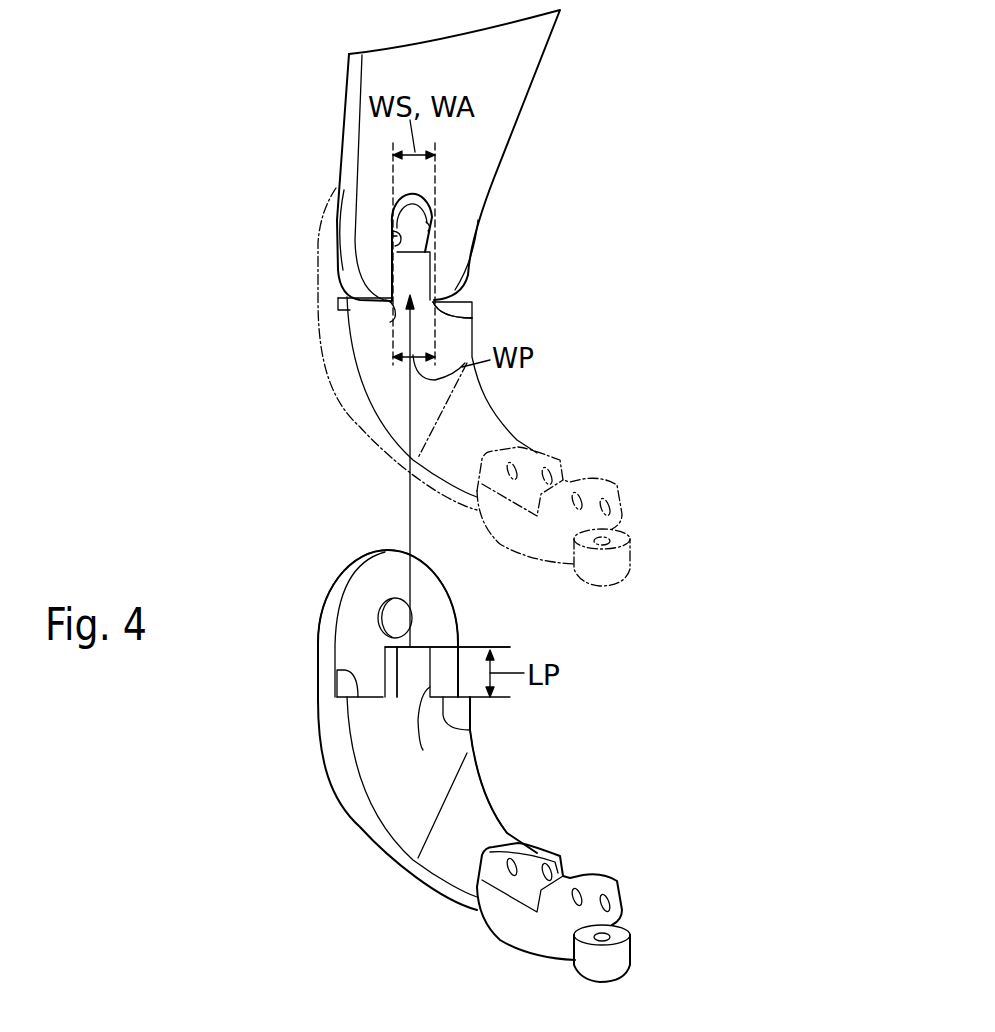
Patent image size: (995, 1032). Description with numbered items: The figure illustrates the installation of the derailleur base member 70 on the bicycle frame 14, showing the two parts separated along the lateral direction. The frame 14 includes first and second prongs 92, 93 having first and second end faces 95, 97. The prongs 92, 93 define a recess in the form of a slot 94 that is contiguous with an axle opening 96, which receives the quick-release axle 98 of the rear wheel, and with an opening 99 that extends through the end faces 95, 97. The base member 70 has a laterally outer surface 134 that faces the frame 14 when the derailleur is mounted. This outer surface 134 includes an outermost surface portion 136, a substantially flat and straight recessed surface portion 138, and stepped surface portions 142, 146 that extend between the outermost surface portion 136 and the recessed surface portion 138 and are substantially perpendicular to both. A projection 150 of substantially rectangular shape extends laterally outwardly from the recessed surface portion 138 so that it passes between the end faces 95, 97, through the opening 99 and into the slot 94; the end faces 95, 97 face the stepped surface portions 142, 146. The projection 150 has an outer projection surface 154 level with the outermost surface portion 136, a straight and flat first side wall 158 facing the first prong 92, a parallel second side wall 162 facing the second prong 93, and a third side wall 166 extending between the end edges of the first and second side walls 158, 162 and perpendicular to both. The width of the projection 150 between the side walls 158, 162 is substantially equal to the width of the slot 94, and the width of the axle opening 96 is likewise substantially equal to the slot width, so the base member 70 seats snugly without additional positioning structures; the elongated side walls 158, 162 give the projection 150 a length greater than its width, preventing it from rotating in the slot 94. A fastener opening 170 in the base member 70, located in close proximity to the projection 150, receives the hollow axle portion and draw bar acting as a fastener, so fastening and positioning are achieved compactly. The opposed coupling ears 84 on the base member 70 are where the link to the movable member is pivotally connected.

The frame 14 is at (518, 58).
The base member 70 is at (487, 403).
The coupling ears 84 is at (562, 859).
The first prong 92 is at (368, 256).
The second prong 93 is at (452, 251).
The slot 94 is at (392, 238).
The first end face 95 is at (390, 318).
The axle opening 96 is at (432, 228).
The second end face 97 is at (443, 303).
The axle 98 is at (392, 222).
The opening 99 is at (396, 308).
The laterally outer surface 134 is at (442, 785).
The outermost surface portion 136 is at (465, 820).
The recessed surface portion 138 is at (423, 582).
The stepped surface portion 142 is at (337, 670).
The stepped surface portion 146 is at (478, 733).
The projection 150 is at (412, 280).
The outer projection surface 154 is at (407, 673).
The first side wall 158 is at (374, 697).
The second side wall 162 is at (426, 733).
The third side wall 166 is at (430, 647).
The fastener opening 170 is at (387, 617).